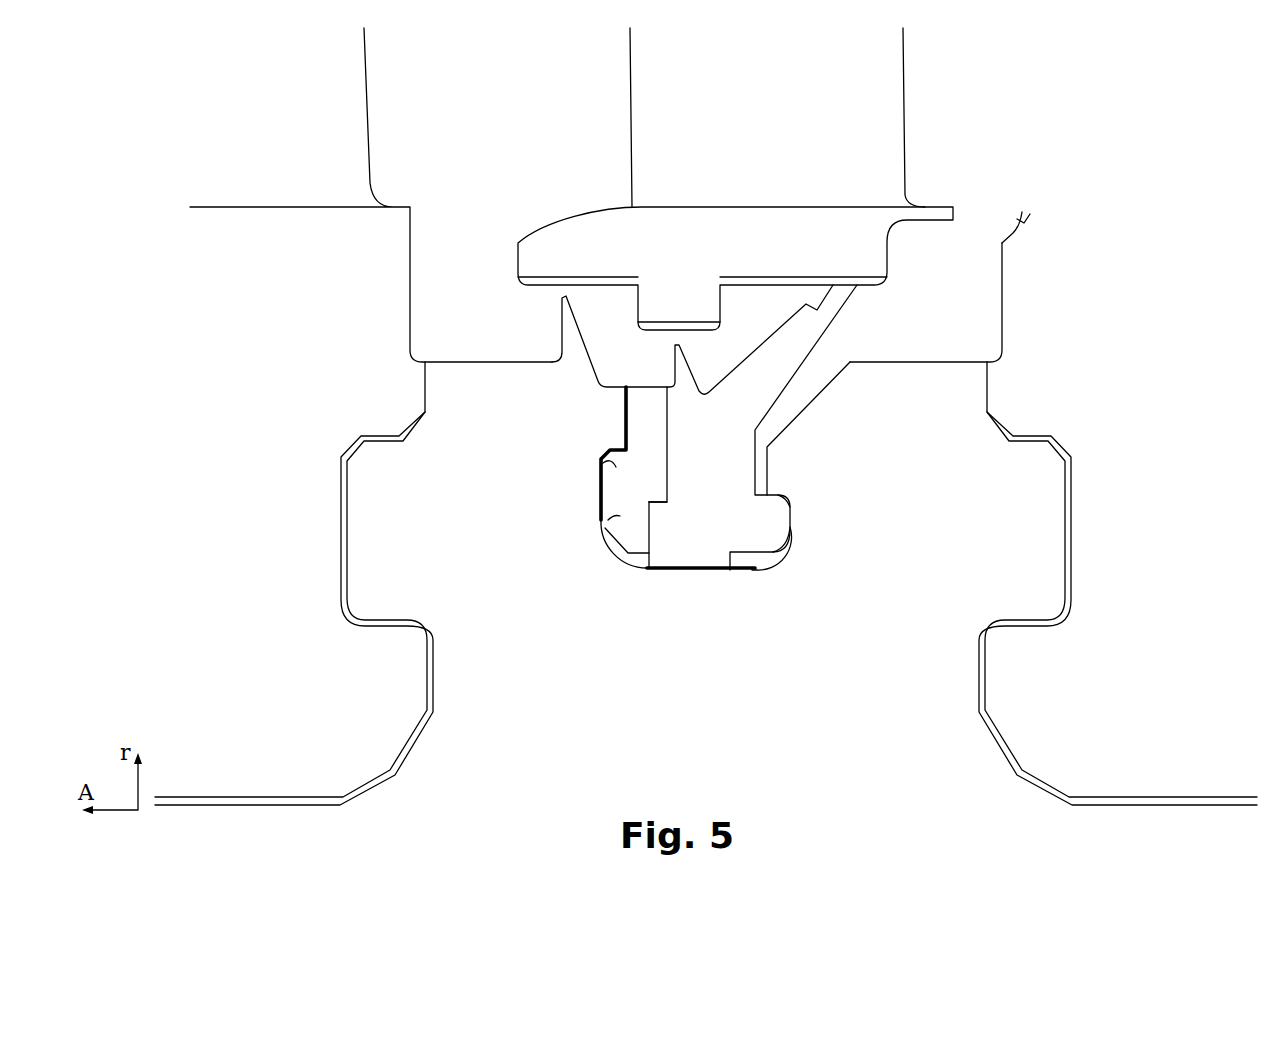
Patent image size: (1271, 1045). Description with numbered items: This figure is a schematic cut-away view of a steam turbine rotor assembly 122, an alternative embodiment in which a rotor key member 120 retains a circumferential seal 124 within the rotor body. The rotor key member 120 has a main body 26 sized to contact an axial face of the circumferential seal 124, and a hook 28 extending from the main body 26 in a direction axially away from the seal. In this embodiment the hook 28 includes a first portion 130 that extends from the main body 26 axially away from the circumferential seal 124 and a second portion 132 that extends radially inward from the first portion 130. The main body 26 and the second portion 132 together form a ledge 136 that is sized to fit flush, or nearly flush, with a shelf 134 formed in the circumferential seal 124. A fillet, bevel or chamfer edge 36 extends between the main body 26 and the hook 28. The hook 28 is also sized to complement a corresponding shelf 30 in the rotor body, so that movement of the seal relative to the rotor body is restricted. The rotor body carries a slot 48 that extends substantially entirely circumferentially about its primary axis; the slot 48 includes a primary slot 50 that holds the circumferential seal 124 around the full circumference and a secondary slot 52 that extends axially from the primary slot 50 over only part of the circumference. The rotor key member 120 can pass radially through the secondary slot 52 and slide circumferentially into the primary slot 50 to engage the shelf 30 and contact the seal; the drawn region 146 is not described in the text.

The rotor assembly 122 is at (183, 158).
The rotor key member 120 is at (628, 385).
The shelf 30 is at (598, 440).
The main body 26 is at (660, 412).
The ledge 136 is at (659, 494).
The circumferential seal 124 is at (742, 434).
The first portion 130 is at (600, 474).
The hook 28 is at (636, 494).
The second portion 132 is at (616, 516).
The fillet, bevel or chamfer edge 36 is at (607, 532).
The secondary slot 52 is at (625, 584).
The shelf 134 is at (664, 514).
The slot 48 is at (676, 607).
The primary slot 50 is at (746, 577).
The bracket 146 is at (895, 722).